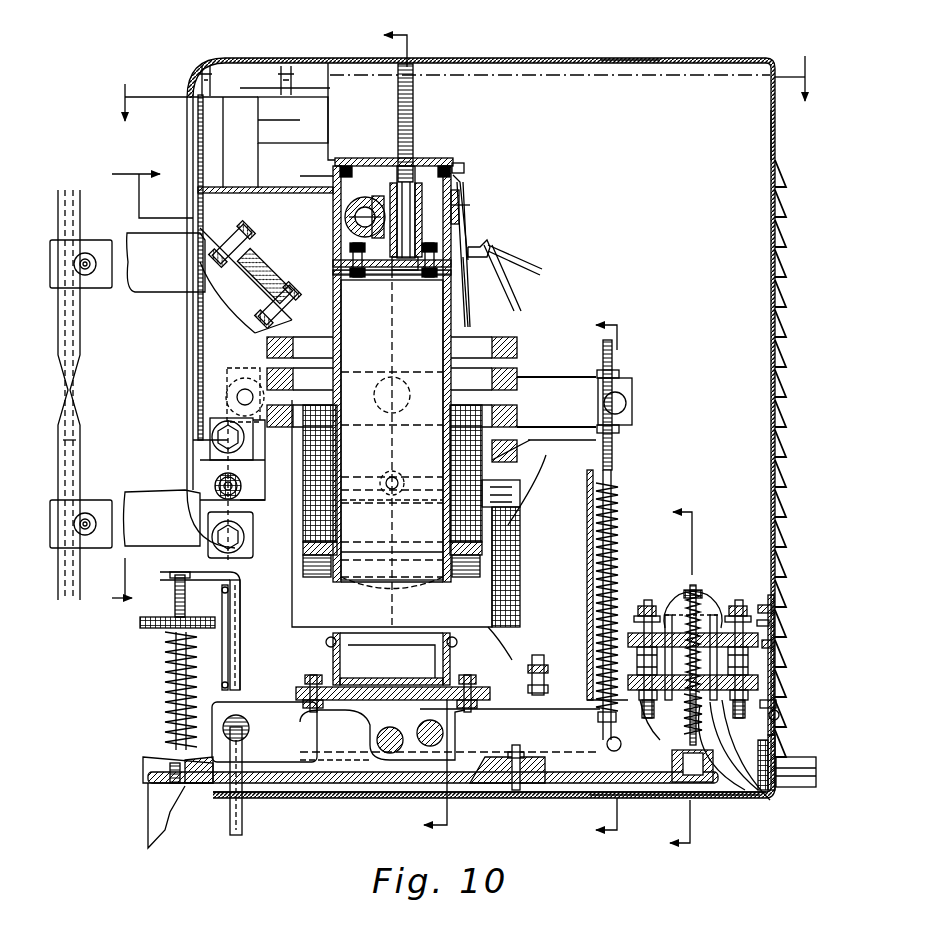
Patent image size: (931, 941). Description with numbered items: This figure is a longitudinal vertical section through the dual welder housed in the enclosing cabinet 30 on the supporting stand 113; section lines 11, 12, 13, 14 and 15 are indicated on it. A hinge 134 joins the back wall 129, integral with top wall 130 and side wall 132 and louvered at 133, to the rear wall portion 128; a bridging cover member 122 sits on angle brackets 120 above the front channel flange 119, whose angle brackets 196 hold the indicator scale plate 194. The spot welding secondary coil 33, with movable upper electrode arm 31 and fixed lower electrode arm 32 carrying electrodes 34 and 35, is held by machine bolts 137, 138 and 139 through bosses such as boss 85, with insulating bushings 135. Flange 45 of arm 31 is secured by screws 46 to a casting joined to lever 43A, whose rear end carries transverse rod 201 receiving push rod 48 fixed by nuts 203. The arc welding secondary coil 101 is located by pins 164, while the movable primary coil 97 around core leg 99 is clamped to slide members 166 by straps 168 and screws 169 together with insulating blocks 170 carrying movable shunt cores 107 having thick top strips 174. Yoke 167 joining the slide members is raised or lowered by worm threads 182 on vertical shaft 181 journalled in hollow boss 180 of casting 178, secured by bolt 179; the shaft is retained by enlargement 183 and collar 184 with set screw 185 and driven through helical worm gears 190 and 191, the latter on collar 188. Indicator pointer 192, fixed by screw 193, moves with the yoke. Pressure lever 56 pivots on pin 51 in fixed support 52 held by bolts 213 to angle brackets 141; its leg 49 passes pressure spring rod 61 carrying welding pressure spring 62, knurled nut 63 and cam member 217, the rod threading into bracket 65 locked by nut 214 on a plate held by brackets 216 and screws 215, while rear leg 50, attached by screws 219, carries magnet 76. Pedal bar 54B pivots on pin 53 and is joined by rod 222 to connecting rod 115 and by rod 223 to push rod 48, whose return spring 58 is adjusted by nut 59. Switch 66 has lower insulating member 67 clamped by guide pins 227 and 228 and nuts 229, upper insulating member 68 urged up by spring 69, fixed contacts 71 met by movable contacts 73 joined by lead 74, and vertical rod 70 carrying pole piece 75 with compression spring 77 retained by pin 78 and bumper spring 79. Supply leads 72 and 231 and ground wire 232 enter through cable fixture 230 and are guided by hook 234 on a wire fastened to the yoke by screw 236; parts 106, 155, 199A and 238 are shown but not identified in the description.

The section line 11- 11 is at (471, 77).
The section line 12- 12 is at (138, 387).
The section line 13- 13 is at (438, 437).
The section line 14- 14 is at (625, 584).
The section line 15- 15 is at (703, 683).
The enclosing cabinet 30 is at (663, 56).
The upper electrode arm 31 is at (135, 240).
The lower electrode arm 32 is at (150, 498).
The spot welding secondary coil 33 is at (514, 343).
The electrode 34 is at (70, 324).
The electrode 35 is at (72, 440).
The lever 43A is at (545, 377).
The flange 45 is at (240, 278).
The screws 46 is at (244, 232).
The push rod 48 is at (612, 458).
The leg 49 is at (178, 785).
The rear leg 50 is at (658, 798).
The pin 51 is at (378, 733).
The fixed support 52 is at (340, 712).
The pivot pin 53 is at (443, 730).
The bar 54B is at (265, 720).
The pressure lever 56 is at (356, 784).
The coiled return spring 58 is at (620, 484).
The return spring adjusting nut 59 is at (598, 716).
The pressure spring rod 61 is at (140, 621).
The welding pressure spring 62 is at (165, 690).
The knurled nut 63 is at (150, 628).
The fixed bracket 65 is at (210, 578).
The switch 66 is at (676, 567).
The lower insulating support member 67 is at (758, 683).
The upper insulating support member 68 is at (769, 622).
The compression spring 69 is at (772, 607).
The vertical rod 70 is at (675, 596).
The contacts 71 is at (628, 640).
The supply current lead 72 is at (522, 256).
The contacts 73 is at (587, 623).
The lead 74 is at (700, 596).
The pole piece 75 is at (588, 795).
The magnet 76 is at (672, 756).
The compression spring 77 is at (702, 594).
The pin 78 is at (693, 590).
The bumper spring 79 is at (702, 710).
The boss 85 is at (246, 476).
The movable primary coil 97 is at (450, 518).
The leg 99 is at (375, 586).
The arc welding secondary coil 101 is at (508, 549).
The coil lead 106 is at (527, 480).
The movable shunt cores 107 is at (312, 577).
The supporting stand 113 is at (148, 805).
The connecting rod 115 is at (242, 810).
The inner flange 119 is at (246, 156).
The angle brackets 120 is at (296, 125).
The bridging cover member 122 is at (243, 59).
The wall portion 128 is at (763, 792).
The back wall 129 is at (774, 150).
The top wall portion 130 is at (543, 60).
The side wall portion 132 is at (614, 64).
The louvers 133 is at (783, 277).
The hinge 134 is at (779, 715).
The insulating bushings 135 is at (215, 485).
The machine bolt 137 is at (212, 537).
The machine bolt 138 is at (215, 478).
The machine bolt 139 is at (212, 437).
The angle brackets 141 is at (440, 638).
The cap insert 155 is at (400, 680).
The locating pins 164 is at (513, 495).
The slide members 166 is at (341, 335).
The yoke 167 is at (418, 158).
The straps 168 is at (300, 450).
The screws 169 is at (440, 584).
The blocks 170 is at (450, 546).
The top strips 174 is at (380, 550).
The casting 178 is at (384, 280).
The bolt 179 is at (334, 262).
The hollow boss 180 is at (465, 205).
The vertical shaft 181 is at (466, 240).
The worm threads 182 is at (413, 92).
The enlargement 183 is at (400, 270).
The collar 184 is at (392, 183).
The set screw 185 is at (459, 200).
The collar 188 is at (349, 217).
The helical worm gear 190 is at (470, 205).
The helical worm gear 191 is at (360, 197).
The indicator pointer 192 is at (268, 194).
The screw 193 is at (330, 174).
The indicator scale plate 194 is at (198, 150).
The angle brackets 196 is at (223, 140).
The bolt 199A is at (356, 277).
The transverse rod 201 is at (632, 403).
The nuts 203 is at (622, 380).
The bolts 213 is at (310, 676).
The nut 214 is at (172, 580).
The screws 215 is at (222, 676).
The brackets 216 is at (242, 615).
The cam member 217 is at (143, 768).
The screws 219 is at (543, 762).
The rod 222 is at (320, 738).
The rod 223 is at (606, 744).
The guide pin 227 is at (665, 598).
The guide pin 228 is at (722, 606).
The nuts 229 is at (650, 700).
The cable fixture 230 is at (795, 788).
The supply current lead 231 is at (512, 288).
The ground wire 232 is at (775, 748).
The hook 234 is at (484, 244).
The screw 236 is at (460, 162).
The screw 238 is at (539, 668).